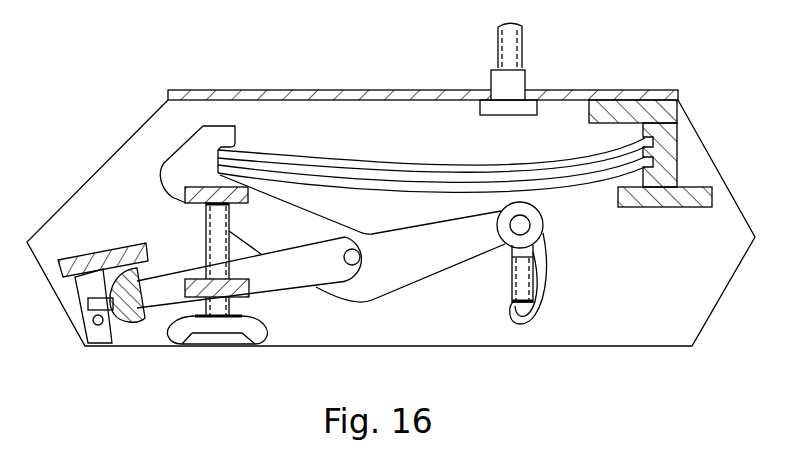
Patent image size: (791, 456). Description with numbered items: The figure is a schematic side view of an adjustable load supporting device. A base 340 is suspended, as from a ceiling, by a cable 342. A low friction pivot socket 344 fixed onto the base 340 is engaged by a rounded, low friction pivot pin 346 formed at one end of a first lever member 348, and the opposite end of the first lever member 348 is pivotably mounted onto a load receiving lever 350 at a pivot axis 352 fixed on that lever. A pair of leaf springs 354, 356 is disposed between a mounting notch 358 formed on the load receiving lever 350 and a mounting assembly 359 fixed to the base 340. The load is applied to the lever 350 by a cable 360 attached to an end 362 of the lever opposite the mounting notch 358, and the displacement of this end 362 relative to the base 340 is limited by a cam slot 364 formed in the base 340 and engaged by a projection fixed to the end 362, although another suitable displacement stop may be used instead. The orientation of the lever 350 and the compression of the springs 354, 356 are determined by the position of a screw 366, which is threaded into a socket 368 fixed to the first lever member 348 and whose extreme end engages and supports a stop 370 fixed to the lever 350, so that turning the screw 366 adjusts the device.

The base 340 is at (563, 91).
The cable 342 is at (522, 48).
The low friction pivot socket 344 is at (110, 340).
The low friction pivot pin 346 is at (128, 323).
The first lever member 348 is at (268, 290).
The load receiving lever 350 is at (421, 276).
The pivot axis 352 is at (362, 257).
The leaf spring 354 is at (333, 157).
The leaf spring 356 is at (390, 190).
The mounting notch 358 is at (233, 146).
The mounting assembly 359 is at (651, 161).
The cable 360 is at (527, 278).
The end 362 is at (528, 223).
The cam slot 364 is at (522, 317).
The screw 366 is at (216, 232).
The socket 368 is at (244, 279).
The stop 370 is at (239, 203).